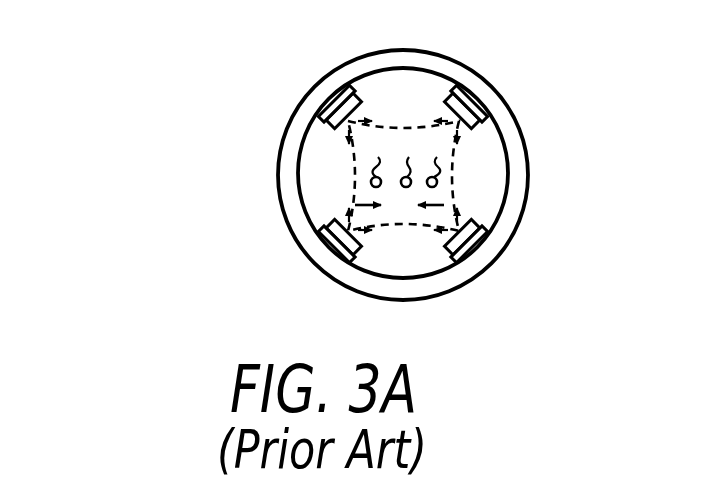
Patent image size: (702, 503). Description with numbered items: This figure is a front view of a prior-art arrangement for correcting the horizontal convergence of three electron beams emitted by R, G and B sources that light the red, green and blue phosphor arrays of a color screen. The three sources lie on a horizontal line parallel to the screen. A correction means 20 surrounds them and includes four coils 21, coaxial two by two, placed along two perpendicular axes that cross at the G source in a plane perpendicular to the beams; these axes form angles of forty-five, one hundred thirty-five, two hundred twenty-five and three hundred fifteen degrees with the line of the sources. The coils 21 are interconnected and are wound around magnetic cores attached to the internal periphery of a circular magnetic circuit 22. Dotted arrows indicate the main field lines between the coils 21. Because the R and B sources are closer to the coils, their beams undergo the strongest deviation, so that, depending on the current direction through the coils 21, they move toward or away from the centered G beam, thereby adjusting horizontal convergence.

The correction means 20 is at (110, 51).
The coils 21 is at (337, 97).
The circular magnetic circuit 22 is at (527, 177).